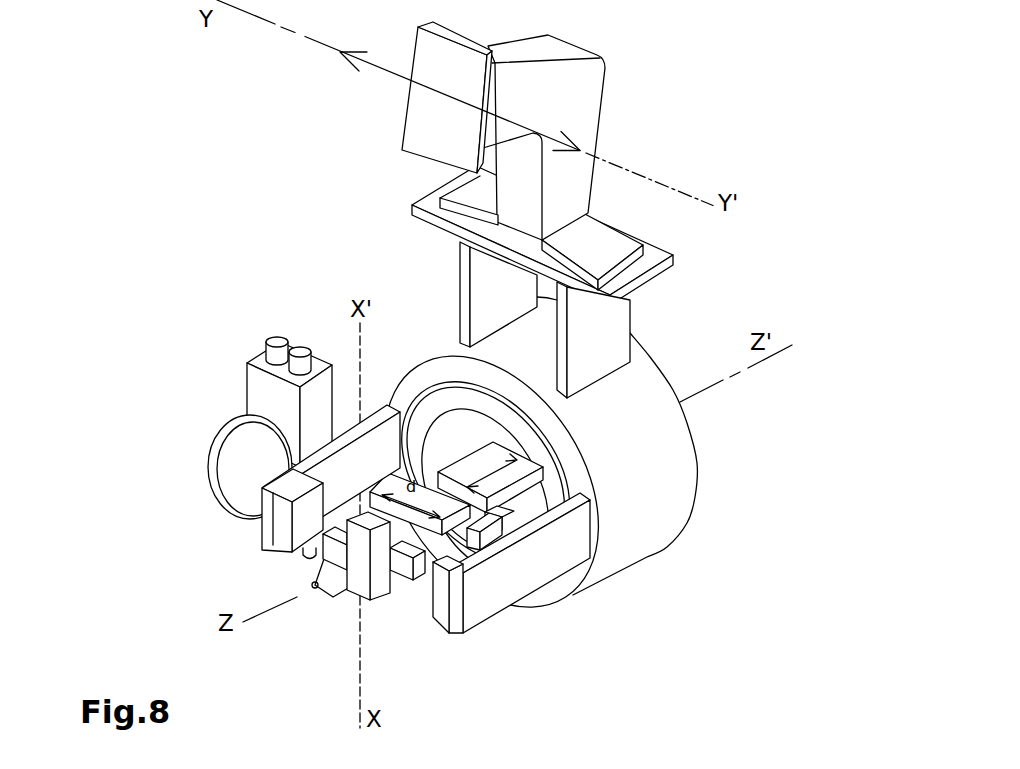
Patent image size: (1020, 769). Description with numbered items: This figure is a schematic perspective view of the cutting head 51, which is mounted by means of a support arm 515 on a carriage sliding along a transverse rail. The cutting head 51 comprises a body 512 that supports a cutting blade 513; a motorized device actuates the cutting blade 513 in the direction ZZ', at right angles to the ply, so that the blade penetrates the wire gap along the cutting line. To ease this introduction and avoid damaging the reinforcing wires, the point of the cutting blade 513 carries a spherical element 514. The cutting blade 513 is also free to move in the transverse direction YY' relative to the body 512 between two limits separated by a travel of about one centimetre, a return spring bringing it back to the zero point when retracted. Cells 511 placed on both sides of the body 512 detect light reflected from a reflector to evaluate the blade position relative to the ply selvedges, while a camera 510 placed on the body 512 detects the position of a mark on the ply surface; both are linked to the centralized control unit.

The cutting head 51 is at (252, 197).
The camera 510 is at (245, 456).
The cells 511 is at (300, 518).
The body 512 is at (637, 510).
The cutting blade 513 is at (338, 585).
The spherical element 514 is at (312, 584).
The support arm 515 is at (533, 102).